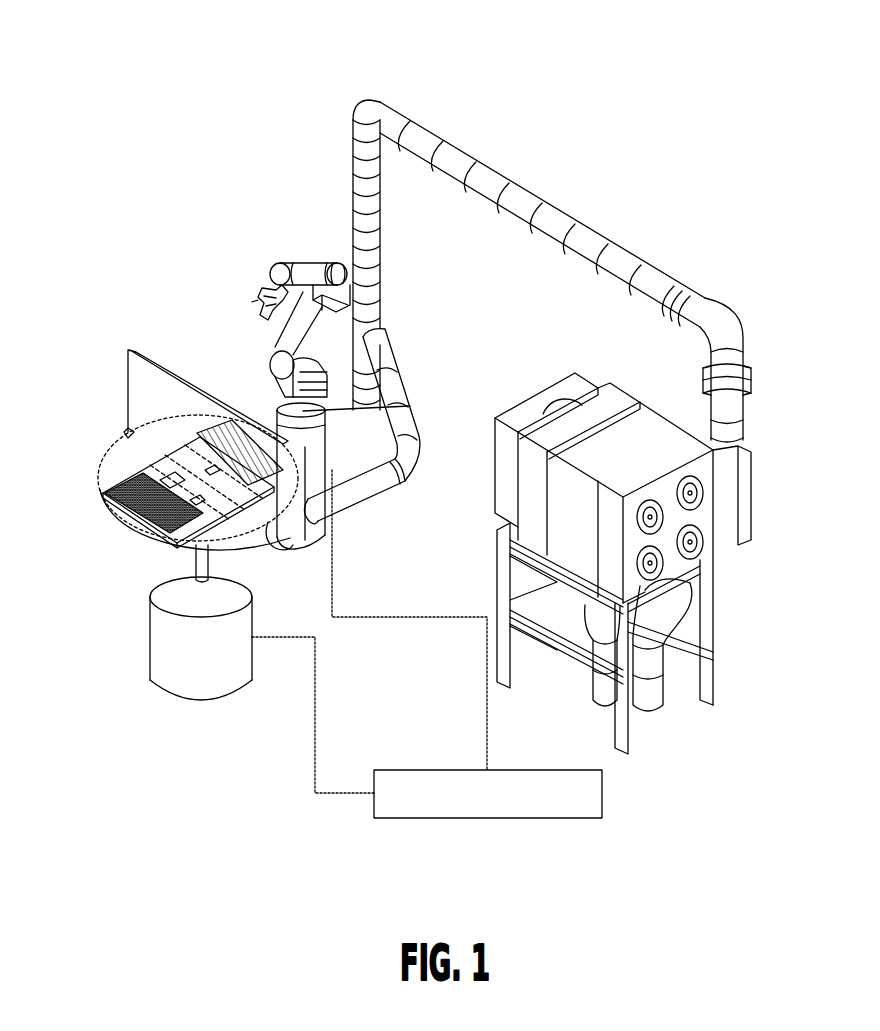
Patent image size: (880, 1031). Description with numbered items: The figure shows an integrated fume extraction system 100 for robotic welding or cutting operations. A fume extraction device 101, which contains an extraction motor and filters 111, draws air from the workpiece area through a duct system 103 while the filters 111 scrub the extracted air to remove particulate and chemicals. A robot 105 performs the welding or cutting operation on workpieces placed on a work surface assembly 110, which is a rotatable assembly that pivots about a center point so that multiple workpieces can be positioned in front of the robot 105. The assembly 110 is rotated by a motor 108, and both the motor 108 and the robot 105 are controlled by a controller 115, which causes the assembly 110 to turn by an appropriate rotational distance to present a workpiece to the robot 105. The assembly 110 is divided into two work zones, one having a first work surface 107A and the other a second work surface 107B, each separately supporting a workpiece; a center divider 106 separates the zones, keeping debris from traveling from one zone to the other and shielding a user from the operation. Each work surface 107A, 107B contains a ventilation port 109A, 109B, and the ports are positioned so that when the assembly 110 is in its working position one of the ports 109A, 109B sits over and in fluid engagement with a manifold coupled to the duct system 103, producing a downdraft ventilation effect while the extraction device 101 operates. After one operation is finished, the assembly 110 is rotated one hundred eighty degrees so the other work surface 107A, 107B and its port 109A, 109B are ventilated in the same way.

The system 100 is at (628, 101).
The fume extraction device 101 is at (703, 572).
The duct system 103 is at (722, 318).
The robot 105 is at (312, 262).
The center divider 106 is at (143, 392).
The first work surface 107A is at (117, 468).
The second work surface 107B is at (333, 520).
The motor 108 is at (150, 622).
The ventilation port 109A is at (105, 505).
The ventilation port 109B is at (410, 407).
The work surface assembly 110 is at (223, 390).
The filters 111 is at (700, 488).
The controller 115 is at (602, 783).